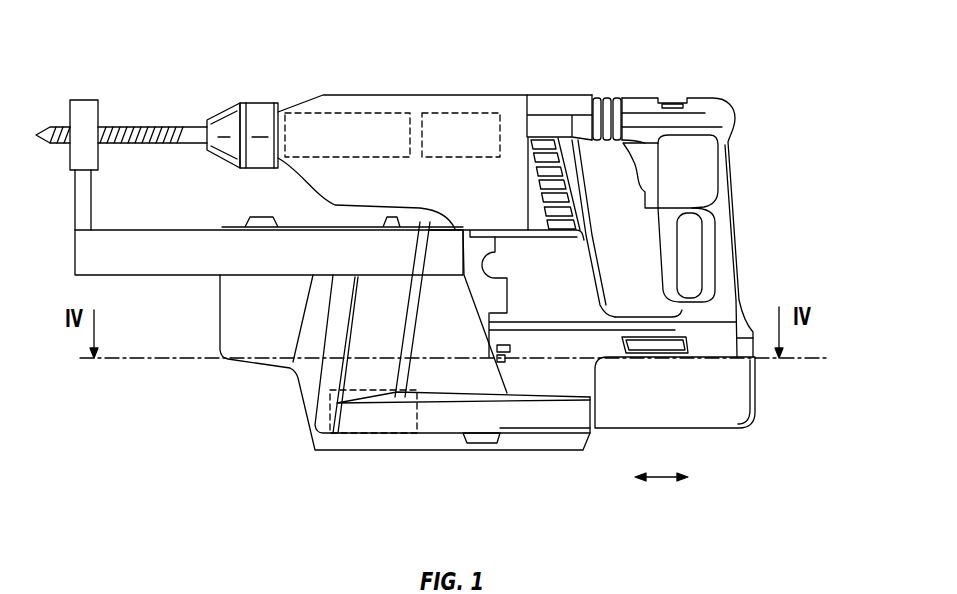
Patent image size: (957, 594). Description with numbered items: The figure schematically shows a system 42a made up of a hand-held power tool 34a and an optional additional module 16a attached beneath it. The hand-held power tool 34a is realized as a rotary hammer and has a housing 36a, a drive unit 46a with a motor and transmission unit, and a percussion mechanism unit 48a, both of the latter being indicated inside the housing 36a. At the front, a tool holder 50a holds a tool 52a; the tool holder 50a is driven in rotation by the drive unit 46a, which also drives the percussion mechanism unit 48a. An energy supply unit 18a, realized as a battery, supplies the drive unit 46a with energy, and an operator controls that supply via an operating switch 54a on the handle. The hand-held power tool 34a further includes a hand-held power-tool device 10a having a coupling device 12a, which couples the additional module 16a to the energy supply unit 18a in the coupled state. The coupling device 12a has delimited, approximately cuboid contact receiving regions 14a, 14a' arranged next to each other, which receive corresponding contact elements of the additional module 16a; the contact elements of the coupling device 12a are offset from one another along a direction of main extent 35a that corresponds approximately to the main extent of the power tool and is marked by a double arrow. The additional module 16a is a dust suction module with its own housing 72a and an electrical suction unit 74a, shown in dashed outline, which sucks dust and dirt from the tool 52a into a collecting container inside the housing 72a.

The hand-held power-tool device 10a is at (536, 391).
The coupling device 12a is at (533, 345).
The contact receiving region 14a is at (468, 369).
The contact receiving region 14a' is at (504, 425).
The additional module 16a is at (289, 422).
The energy supply unit 18a is at (738, 392).
The hand-held power tool 34a is at (626, 72).
The direction of main extent 35a is at (665, 478).
The housing 36a is at (410, 97).
The system 42a is at (806, 80).
The drive unit 46a is at (458, 122).
The percussion mechanism unit 48a is at (337, 122).
The tool holder 50a is at (257, 127).
The tool 52a is at (183, 130).
The operating switch 54a is at (655, 167).
The housing 72a is at (320, 423).
The electrical suction unit 74a is at (368, 437).